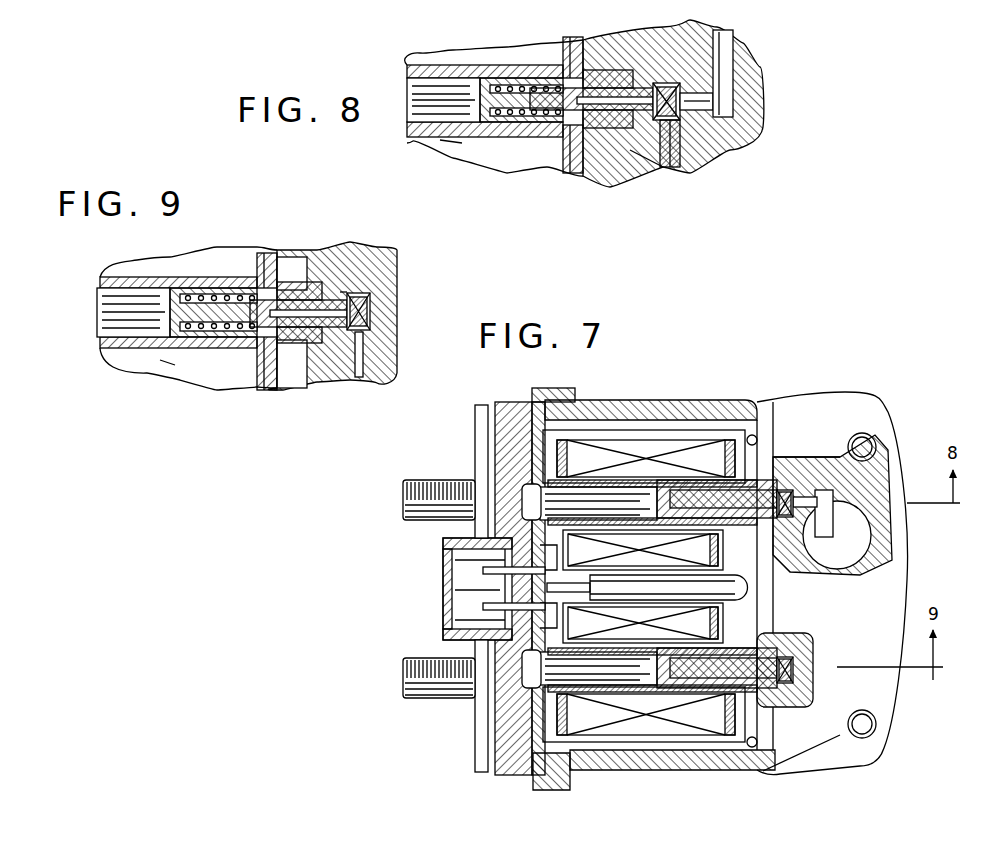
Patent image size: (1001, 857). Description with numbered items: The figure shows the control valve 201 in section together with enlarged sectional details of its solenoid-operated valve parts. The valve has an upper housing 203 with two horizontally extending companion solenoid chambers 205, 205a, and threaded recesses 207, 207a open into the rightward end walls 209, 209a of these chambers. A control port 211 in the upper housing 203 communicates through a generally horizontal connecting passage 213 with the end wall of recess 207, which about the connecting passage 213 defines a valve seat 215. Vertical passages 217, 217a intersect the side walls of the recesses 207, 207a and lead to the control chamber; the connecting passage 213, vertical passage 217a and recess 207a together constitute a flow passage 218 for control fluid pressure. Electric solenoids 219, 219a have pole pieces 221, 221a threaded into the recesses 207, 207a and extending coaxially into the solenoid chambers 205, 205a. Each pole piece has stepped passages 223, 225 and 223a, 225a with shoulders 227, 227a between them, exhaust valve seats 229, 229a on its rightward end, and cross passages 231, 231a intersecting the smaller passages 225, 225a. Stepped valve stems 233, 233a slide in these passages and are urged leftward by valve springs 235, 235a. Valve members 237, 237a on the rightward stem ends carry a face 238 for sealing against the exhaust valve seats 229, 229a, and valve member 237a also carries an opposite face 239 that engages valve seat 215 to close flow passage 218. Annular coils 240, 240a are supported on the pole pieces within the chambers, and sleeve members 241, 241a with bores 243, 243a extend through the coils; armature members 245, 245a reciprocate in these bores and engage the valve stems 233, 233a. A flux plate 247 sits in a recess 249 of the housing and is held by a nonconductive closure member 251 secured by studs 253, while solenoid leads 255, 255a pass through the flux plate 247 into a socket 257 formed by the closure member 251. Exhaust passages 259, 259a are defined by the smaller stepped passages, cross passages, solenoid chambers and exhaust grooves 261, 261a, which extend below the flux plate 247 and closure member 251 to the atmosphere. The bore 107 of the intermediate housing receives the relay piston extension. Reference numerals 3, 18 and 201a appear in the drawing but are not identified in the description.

In FIG. 8, the pump 3 is at (556, 9).
In FIG. 8, the valve 18 is at (428, 0).
In FIG. 7, the bore 107 is at (708, 592).
In FIG. 7, the control valve 201 is at (450, 752).
In FIG. 8, the valve assembly 201a is at (668, 66).
In FIG. 7, the upper housing 203 is at (813, 736).
In FIG. 7, the solenoid chamber 205 is at (662, 768).
In FIG. 7, the solenoid chamber 205a is at (645, 419).
In FIG. 9, the threaded recess 207 is at (386, 262).
In FIG. 7, the threaded recess 207 is at (787, 633).
In FIG. 7, the threaded recess 207a is at (770, 484).
In FIG. 7, the end wall 209 is at (762, 773).
In FIG. 7, the end wall 209a is at (760, 442).
In FIG. 8, the control port 211 is at (724, 66).
In FIG. 7, the control port 211 is at (830, 540).
In FIG. 8, the connecting passage 213 is at (692, 106).
In FIG. 7, the connecting passage 213 is at (820, 501).
In FIG. 8, the valve seat 215 is at (739, 33).
In FIG. 7, the valve seat 215 is at (805, 556).
In FIG. 9, the vertical passage 217 is at (392, 380).
In FIG. 8, the vertical passage 217a is at (647, 170).
In FIG. 8, the flow passage 218 is at (746, 117).
In FIG. 7, the flow passage 218 is at (812, 463).
In FIG. 9, the electric solenoid 219 is at (167, 364).
In FIG. 7, the electric solenoid 219 is at (735, 770).
In FIG. 8, the electric solenoid 219a is at (462, 144).
In FIG. 7, the electric solenoid 219a is at (646, 444).
In FIG. 9, the pole piece 221 is at (223, 352).
In FIG. 7, the pole piece 221 is at (660, 590).
In FIG. 8, the pole piece 221a is at (510, 136).
In FIG. 7, the pole piece 221a is at (654, 554).
In FIG. 9, the stepped passage 223 is at (197, 290).
In FIG. 8, the stepped passage 223a is at (565, 58).
In FIG. 9, the stepped passage 225 is at (300, 298).
In FIG. 8, the stepped passage 225a is at (597, 70).
In FIG. 9, the shoulder 227 is at (293, 355).
In FIG. 8, the shoulder 227a is at (578, 135).
In FIG. 9, the exhaust valve seat 229 is at (337, 340).
In FIG. 7, the exhaust valve seat 229 is at (778, 682).
In FIG. 8, the exhaust valve seat 229a is at (620, 130).
In FIG. 7, the exhaust valve seat 229a is at (793, 479).
In FIG. 7, the cross passage 231 is at (718, 625).
In FIG. 7, the cross passage 231a is at (752, 434).
In FIG. 9, the stepped valve stem 233 is at (130, 310).
In FIG. 7, the stepped valve stem 233 is at (660, 688).
In FIG. 8, the stepped valve stem 233a is at (407, 81).
In FIG. 7, the stepped valve stem 233a is at (660, 490).
In FIG. 9, the valve spring 235 is at (257, 330).
In FIG. 8, the valve spring 235a is at (540, 118).
In FIG. 9, the valve member 237 is at (379, 303).
In FIG. 7, the valve member 237 is at (791, 669).
In FIG. 8, the valve member 237a is at (698, 121).
In FIG. 7, the valve member 237a is at (800, 497).
In FIG. 9, the valve face 238 is at (340, 292).
In FIG. 8, the valve face 239 is at (676, 126).
In FIG. 7, the electrical coil 240 is at (607, 772).
In FIG. 7, the electrical coil 240a is at (545, 402).
In FIG. 9, the sleeve member 241 is at (134, 277).
In FIG. 7, the sleeve member 241 is at (625, 742).
In FIG. 8, the sleeve member 241a is at (440, 66).
In FIG. 7, the sleeve member 241a is at (620, 462).
In FIG. 9, the sleeve bore 243 is at (117, 348).
In FIG. 7, the sleeve bore 243 is at (618, 712).
In FIG. 8, the sleeve bore 243a is at (411, 125).
In FIG. 7, the sleeve bore 243a is at (555, 474).
In FIG. 7, the armature member 245 is at (631, 623).
In FIG. 7, the armature member 245a is at (631, 550).
In FIG. 7, the flux plate 247 is at (503, 774).
In FIG. 7, the recess 249 is at (543, 770).
In FIG. 7, the closure member 251 is at (483, 704).
In FIG. 7, the stud 253 is at (492, 405).
In FIG. 7, the solenoid lead 255 is at (527, 610).
In FIG. 7, the solenoid lead 255a is at (483, 571).
In FIG. 7, the socket 257 is at (460, 540).
In FIG. 7, the exhaust passage 259 is at (745, 747).
In FIG. 7, the exhaust passage 259a is at (752, 481).
In FIG. 7, the exhaust groove 261 is at (525, 666).
In FIG. 7, the exhaust groove 261a is at (527, 492).